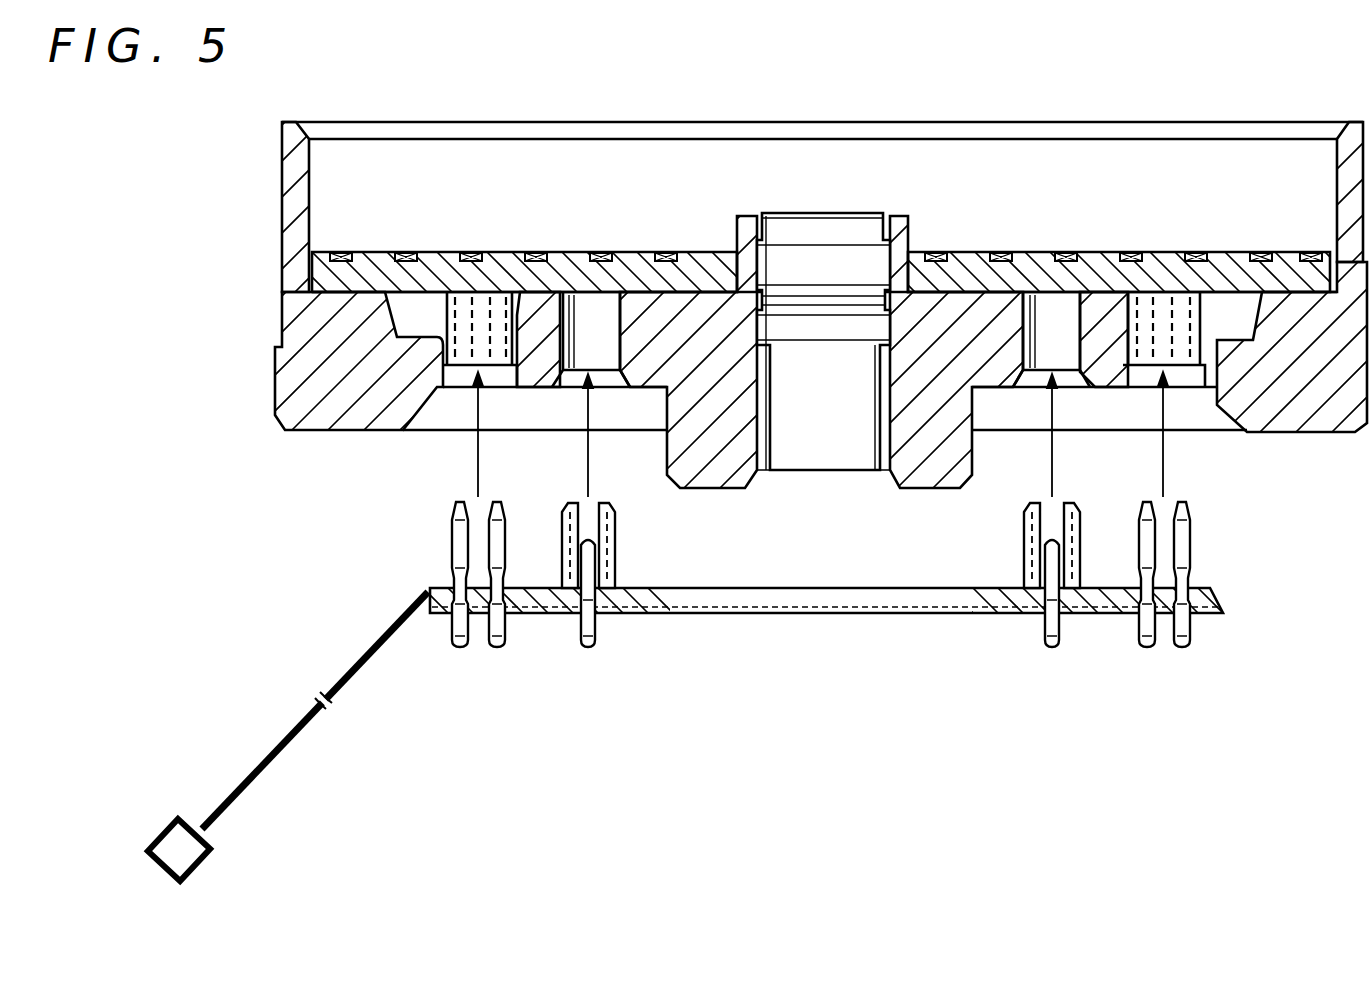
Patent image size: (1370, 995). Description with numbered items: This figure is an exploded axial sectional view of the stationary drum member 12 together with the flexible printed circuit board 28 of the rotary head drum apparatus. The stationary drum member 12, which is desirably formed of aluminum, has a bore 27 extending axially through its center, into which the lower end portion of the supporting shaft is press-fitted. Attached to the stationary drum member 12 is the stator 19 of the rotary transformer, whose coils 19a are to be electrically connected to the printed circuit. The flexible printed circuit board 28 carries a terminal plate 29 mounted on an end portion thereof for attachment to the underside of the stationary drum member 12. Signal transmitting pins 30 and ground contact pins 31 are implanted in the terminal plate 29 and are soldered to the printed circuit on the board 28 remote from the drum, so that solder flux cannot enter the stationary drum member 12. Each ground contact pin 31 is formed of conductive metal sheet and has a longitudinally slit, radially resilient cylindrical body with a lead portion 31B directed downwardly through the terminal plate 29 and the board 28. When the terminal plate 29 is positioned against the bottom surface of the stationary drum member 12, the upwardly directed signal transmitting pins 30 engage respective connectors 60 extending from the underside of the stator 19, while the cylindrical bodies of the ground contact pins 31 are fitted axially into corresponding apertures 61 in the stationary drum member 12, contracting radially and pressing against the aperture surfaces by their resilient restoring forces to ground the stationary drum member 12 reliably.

The stationary drum member 12 is at (967, 157).
The stator 19 is at (1170, 265).
The coils 19a is at (340, 258).
The bore 27 is at (842, 447).
The flexible printed circuit board 28 is at (372, 652).
The terminal plate 29 is at (1213, 597).
The signal transmitting pins 30 is at (490, 534).
The ground contact pins 31 is at (614, 553).
The lead portion 31B is at (603, 636).
The connectors 60 is at (462, 372).
The apertures 61 is at (576, 373).